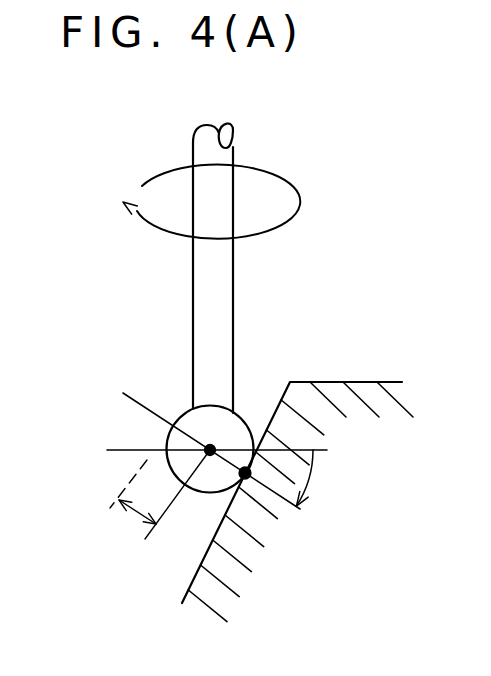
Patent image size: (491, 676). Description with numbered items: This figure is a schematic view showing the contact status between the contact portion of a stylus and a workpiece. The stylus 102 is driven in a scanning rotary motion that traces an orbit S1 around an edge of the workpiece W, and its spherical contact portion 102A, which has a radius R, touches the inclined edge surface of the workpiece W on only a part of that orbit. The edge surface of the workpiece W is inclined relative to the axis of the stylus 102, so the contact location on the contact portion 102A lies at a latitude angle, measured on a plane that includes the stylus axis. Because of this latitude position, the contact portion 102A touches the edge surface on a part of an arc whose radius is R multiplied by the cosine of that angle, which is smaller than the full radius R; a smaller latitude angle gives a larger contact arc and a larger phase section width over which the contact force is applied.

The stylus 102 is at (197, 271).
The contact portion 102A is at (185, 409).
The orbit of the scanning rotary motion S1 is at (287, 180).
The workpiece W is at (338, 399).
The radius of the contact portion R is at (160, 502).